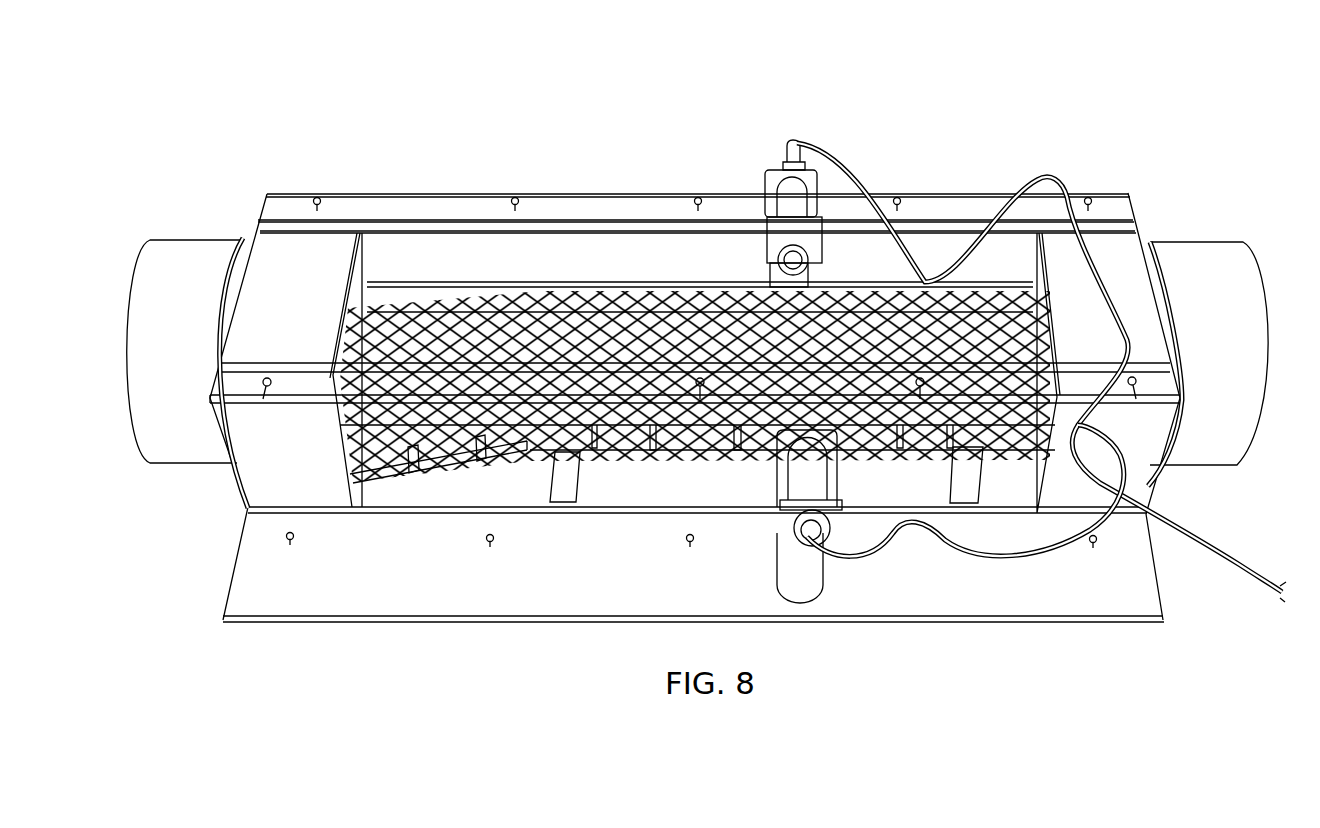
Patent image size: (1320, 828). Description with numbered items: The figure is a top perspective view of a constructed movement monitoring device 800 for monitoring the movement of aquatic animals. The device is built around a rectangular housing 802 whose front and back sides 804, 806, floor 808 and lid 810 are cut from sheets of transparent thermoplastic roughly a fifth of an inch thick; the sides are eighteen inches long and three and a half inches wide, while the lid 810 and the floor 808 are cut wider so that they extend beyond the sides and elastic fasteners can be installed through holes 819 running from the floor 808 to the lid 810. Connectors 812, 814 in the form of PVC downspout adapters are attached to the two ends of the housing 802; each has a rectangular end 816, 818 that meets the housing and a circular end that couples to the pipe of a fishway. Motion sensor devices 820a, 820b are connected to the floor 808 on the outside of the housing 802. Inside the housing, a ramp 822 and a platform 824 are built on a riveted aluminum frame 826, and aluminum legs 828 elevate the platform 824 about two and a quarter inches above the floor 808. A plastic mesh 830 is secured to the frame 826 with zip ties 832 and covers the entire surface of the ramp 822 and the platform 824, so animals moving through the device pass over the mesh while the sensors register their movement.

The movement monitoring device 800 is at (172, 92).
The rectangular housing 802 is at (1150, 130).
The front side 804 is at (245, 508).
The back side 806 is at (300, 222).
The floor 808 is at (313, 622).
The lid 810 is at (370, 193).
The connector 812 is at (152, 248).
The connector 814 is at (1243, 256).
The rectangular end 816 is at (265, 268).
The rectangular end 818 is at (1137, 275).
The holes 819 is at (516, 199).
The motion sensor device 820a is at (783, 523).
The motion sensor device 820b is at (768, 173).
The ramp 822 is at (450, 455).
The platform 824 is at (750, 440).
The frame 826 is at (690, 327).
The aluminum legs 828 is at (565, 500).
The plastic mesh 830 is at (648, 458).
The zip ties 832 is at (415, 472).